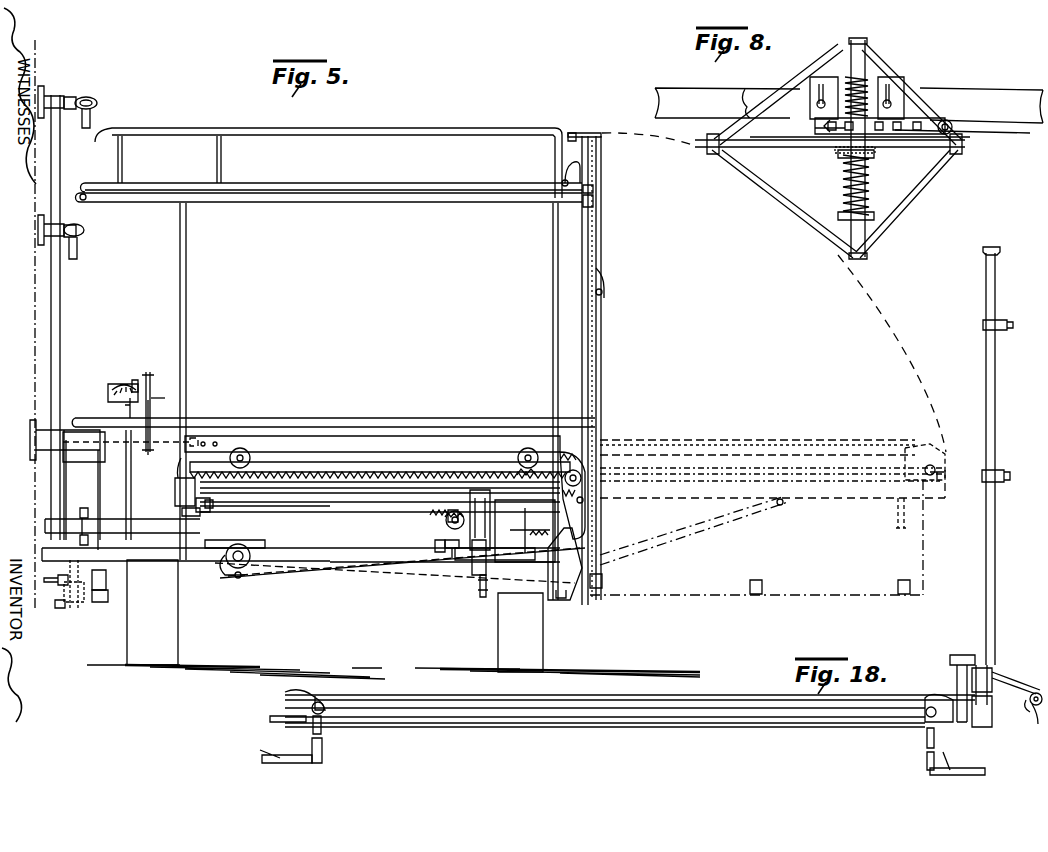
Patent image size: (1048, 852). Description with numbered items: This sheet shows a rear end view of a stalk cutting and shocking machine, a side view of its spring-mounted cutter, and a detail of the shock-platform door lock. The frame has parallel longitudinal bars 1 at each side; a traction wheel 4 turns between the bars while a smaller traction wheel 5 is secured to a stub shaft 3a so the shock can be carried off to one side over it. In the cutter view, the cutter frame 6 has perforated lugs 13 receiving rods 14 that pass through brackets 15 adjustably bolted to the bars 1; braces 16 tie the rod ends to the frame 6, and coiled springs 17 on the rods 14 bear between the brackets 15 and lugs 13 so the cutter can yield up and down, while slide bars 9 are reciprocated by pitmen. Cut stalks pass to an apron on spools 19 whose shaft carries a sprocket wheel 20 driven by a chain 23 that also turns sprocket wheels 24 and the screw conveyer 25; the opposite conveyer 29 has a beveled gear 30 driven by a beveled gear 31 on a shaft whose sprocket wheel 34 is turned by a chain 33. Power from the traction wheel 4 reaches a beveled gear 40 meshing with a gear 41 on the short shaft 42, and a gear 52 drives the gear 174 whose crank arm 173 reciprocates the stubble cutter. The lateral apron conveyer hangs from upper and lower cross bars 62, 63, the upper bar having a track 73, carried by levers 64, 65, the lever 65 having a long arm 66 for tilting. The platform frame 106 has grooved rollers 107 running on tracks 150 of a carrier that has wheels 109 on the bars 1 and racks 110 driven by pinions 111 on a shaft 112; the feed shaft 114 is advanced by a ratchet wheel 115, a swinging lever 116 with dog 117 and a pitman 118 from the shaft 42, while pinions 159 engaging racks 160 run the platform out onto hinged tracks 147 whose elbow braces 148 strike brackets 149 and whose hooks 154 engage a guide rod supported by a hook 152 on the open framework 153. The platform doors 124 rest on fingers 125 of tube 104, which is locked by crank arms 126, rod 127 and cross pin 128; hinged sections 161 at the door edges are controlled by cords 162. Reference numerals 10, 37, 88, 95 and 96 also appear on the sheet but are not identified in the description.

In FIG. 5, the longitudinal bars 1 is at (183, 521).
In FIG. 8, the longitudinal bars 1 is at (970, 85).
In FIG. 5, the stub shaft 3a is at (492, 610).
In FIG. 5, the traction wheel 4 is at (152, 612).
In FIG. 5, the traction wheel 5 is at (520, 632).
In FIG. 8, the cutter frame 6 is at (792, 149).
In FIG. 8, the slide bars 9 is at (817, 130).
In FIG. 8, the adjusting bar 10 is at (900, 122).
In FIG. 8, the perforated lugs 13 is at (840, 152).
In FIG. 8, the rods 14 is at (860, 50).
In FIG. 8, the brackets 15 is at (872, 90).
In FIG. 8, the braces 16 is at (878, 80).
In FIG. 8, the coiled springs 17 is at (850, 82).
In FIG. 5, the spools 19 is at (106, 580).
In FIG. 5, the sprocket wheel 20 is at (30, 441).
In FIG. 5, the chain 23 is at (35, 347).
In FIG. 5, the sprocket wheels 24 is at (46, 90).
In FIG. 5, the screw conveyer 25 is at (92, 124).
In FIG. 5, the conveyer 29 is at (132, 406).
In FIG. 5, the beveled gear 30 is at (108, 388).
In FIG. 5, the beveled gear 31 is at (137, 378).
In FIG. 5, the chain 33 is at (152, 400).
In FIG. 5, the sprocket wheel 34 is at (152, 375).
In FIG. 5, the collar 37 is at (58, 581).
In FIG. 5, the beveled gear 40 is at (235, 535).
In FIG. 5, the beveled gear 41 is at (249, 553).
In FIG. 5, the short shaft 42 is at (238, 572).
In FIG. 5, the gear 52 is at (84, 525).
In FIG. 5, the upper cross bar 62 is at (336, 200).
In FIG. 5, the lower cross bar 63 is at (370, 416).
In FIG. 5, the lever 64 is at (187, 306).
In FIG. 5, the lever 65 is at (553, 329).
In FIG. 5, the long arm 66 is at (182, 514).
In FIG. 5, the track 73 is at (441, 190).
In FIG. 5, the frame 88 is at (454, 534).
In FIG. 5, the screw 95 is at (490, 586).
In FIG. 5, the housing 96 is at (525, 539).
In FIG. 5, the tube 104 is at (986, 406).
In FIG. 18, the tube 104 is at (523, 720).
In FIG. 5, the frame 106 is at (343, 464).
In FIG. 18, the frame 106 is at (681, 729).
In FIG. 5, the grooved rollers 107 is at (255, 449).
In FIG. 5, the wheels 109 is at (176, 490).
In FIG. 5, the longitudinal racks 110 is at (212, 492).
In FIG. 5, the pinions 111 is at (210, 506).
In FIG. 5, the shaft 112 is at (380, 511).
In FIG. 5, the shaft 114 is at (441, 523).
In FIG. 5, the ratchet wheel 115 is at (440, 522).
In FIG. 5, the swinging lever 116 is at (459, 580).
In FIG. 5, the dog 117 is at (445, 541).
In FIG. 5, the pitman 118 is at (333, 578).
In FIG. 5, the doors 124 is at (797, 582).
In FIG. 18, the doors 124 is at (326, 736).
In FIG. 5, the fingers 125 is at (1008, 325).
In FIG. 5, the crank arms 126 is at (918, 449).
In FIG. 18, the crank arms 126 is at (957, 685).
In FIG. 5, the rod 127 is at (760, 448).
In FIG. 18, the rod 127 is at (955, 655).
In FIG. 18, the cross pin 128 is at (1034, 708).
In FIG. 5, the hinged tracks 147 is at (603, 246).
In FIG. 5, the elbow braces 148 is at (603, 403).
In FIG. 5, the brackets 149 is at (562, 595).
In FIG. 5, the tracks 150 is at (362, 490).
In FIG. 5, the hook 152 is at (562, 164).
In FIG. 5, the open frame work 153 is at (377, 132).
In FIG. 5, the hooks 154 is at (596, 189).
In FIG. 5, the pinions 159 is at (594, 512).
In FIG. 5, the racks 160 is at (426, 466).
In FIG. 5, the hinged sections 161 is at (690, 596).
In FIG. 18, the hinged sections 161 is at (263, 758).
In FIG. 18, the cords 162 is at (300, 752).
In FIG. 5, the crank arm 173 is at (66, 598).
In FIG. 5, the gear 174 is at (84, 606).